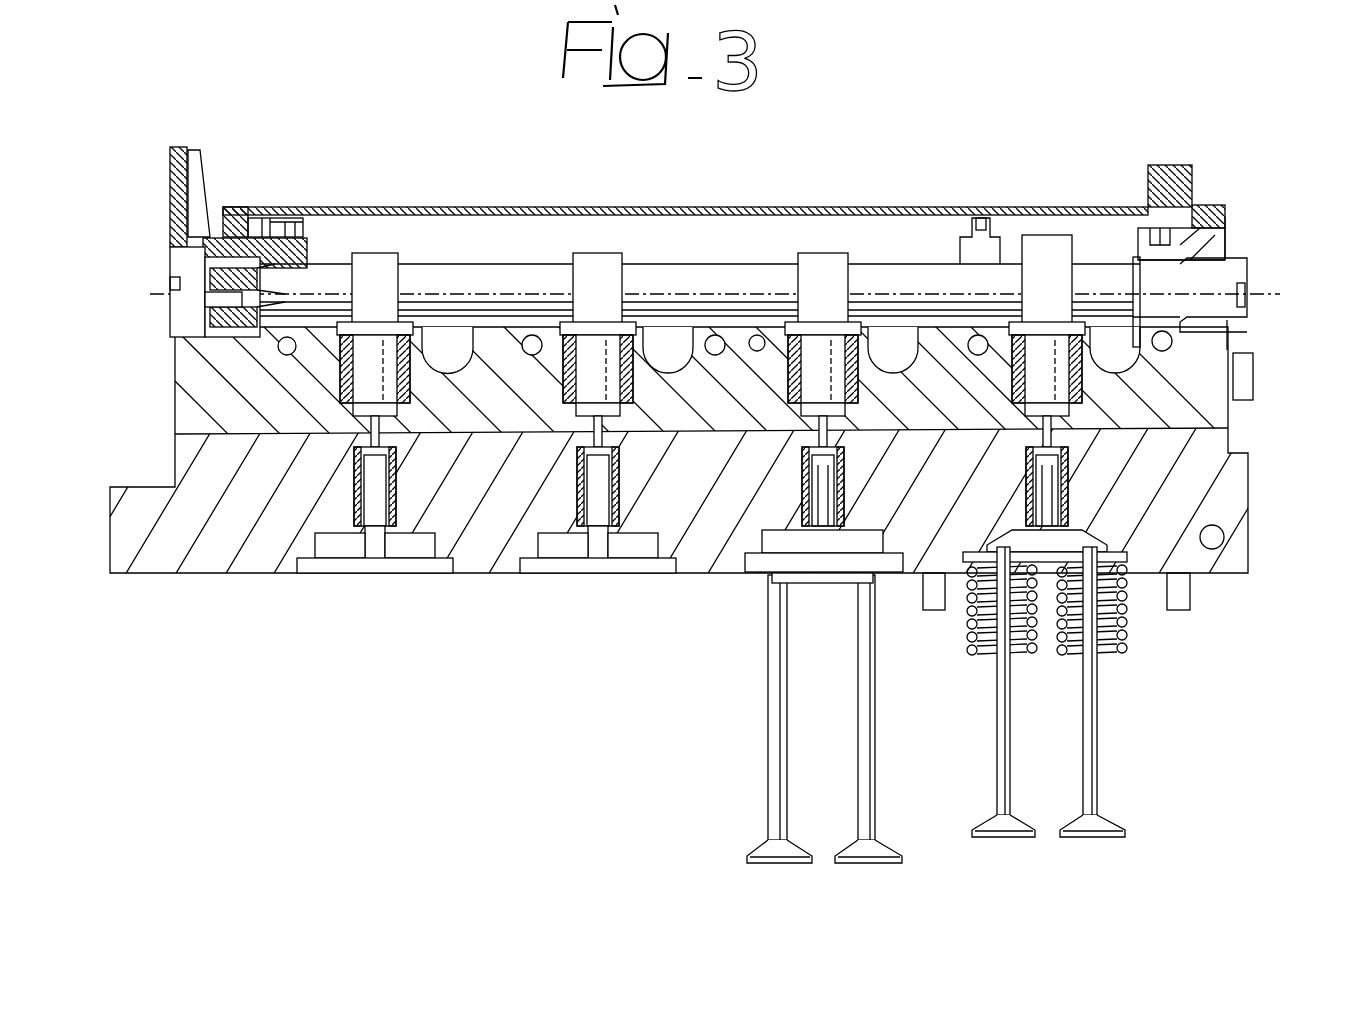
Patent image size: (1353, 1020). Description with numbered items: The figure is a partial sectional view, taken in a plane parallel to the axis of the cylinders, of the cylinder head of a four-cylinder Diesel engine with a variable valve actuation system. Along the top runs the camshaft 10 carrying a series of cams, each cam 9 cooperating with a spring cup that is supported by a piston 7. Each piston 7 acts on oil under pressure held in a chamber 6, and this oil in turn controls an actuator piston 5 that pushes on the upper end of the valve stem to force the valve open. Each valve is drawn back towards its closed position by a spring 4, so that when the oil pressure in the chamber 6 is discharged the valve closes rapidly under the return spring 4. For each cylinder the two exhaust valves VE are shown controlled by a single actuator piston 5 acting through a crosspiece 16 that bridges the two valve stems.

The spring 4 is at (1125, 623).
The piston 5 is at (813, 500).
The chamber 6 is at (827, 423).
The piston 7 is at (826, 365).
The cam 9 is at (377, 265).
The camshaft 10 is at (713, 273).
The crosspiece 16 is at (832, 573).
The exhaust valves VE is at (1090, 712).